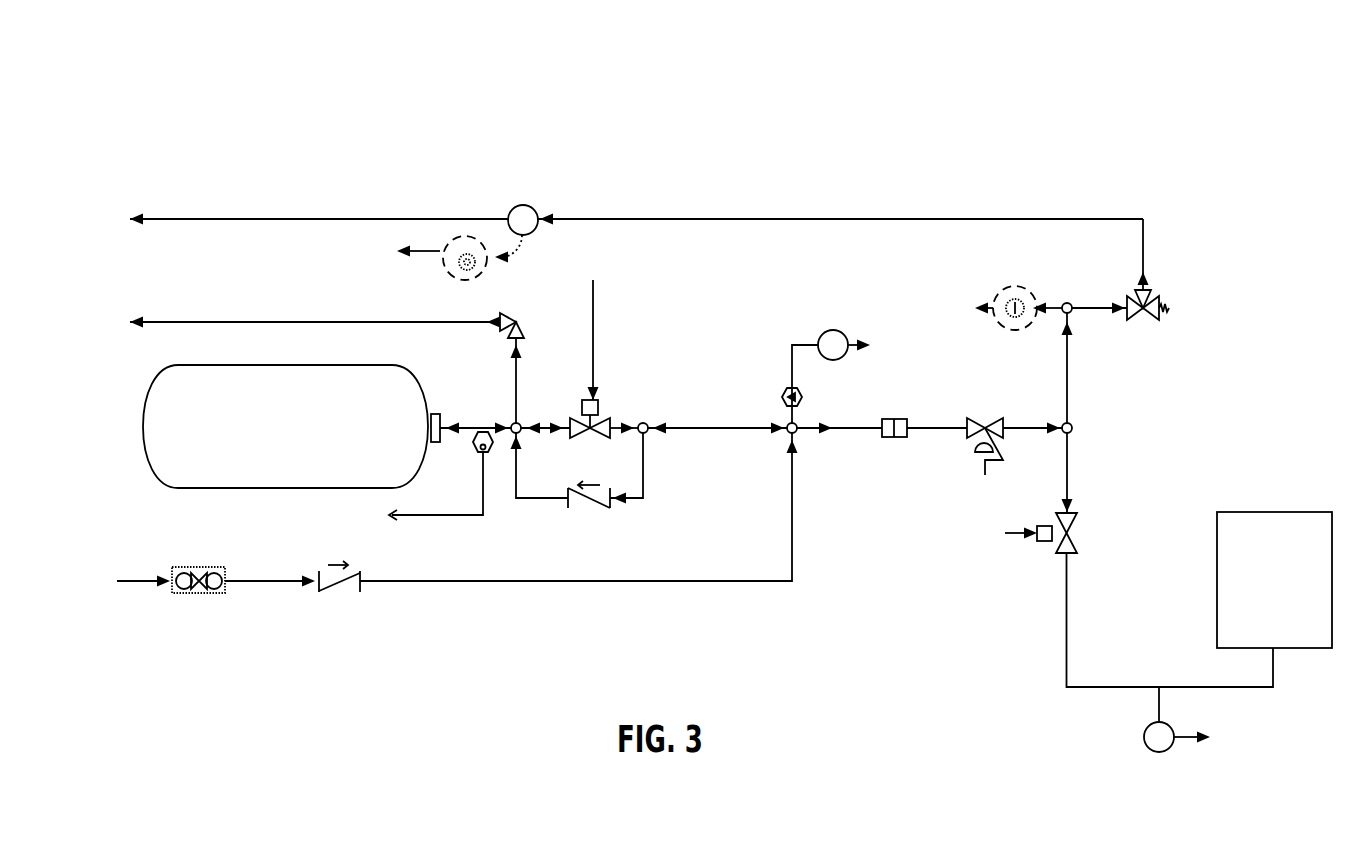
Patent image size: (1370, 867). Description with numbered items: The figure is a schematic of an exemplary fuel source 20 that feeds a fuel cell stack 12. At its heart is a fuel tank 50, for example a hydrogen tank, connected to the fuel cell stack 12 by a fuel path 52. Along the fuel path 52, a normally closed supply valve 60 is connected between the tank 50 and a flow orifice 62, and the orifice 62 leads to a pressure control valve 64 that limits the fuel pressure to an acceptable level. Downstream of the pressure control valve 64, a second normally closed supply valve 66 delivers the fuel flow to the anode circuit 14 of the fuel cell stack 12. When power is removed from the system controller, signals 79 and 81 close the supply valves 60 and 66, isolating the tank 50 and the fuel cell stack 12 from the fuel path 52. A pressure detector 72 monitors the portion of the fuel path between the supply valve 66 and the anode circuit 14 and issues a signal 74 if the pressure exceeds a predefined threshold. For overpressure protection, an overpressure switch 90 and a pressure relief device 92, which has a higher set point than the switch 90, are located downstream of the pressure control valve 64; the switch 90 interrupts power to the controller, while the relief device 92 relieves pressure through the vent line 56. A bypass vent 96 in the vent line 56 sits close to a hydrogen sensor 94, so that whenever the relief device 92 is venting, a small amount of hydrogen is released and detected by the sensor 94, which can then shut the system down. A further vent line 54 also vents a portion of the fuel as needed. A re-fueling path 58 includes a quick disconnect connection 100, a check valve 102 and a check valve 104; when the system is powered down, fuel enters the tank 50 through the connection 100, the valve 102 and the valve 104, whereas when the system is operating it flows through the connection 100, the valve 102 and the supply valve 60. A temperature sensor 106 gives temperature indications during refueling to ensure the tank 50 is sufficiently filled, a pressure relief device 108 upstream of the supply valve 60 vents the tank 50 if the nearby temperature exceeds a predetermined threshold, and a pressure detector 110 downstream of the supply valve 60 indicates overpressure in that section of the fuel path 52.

The fuel cell stack 12 is at (1279, 558).
The anode circuit 14 is at (1207, 637).
The fuel source 20 is at (1024, 181).
The fuel tank 50 is at (291, 413).
The fuel path 52 is at (710, 408).
The vent line 54 is at (315, 311).
The vent line 56 is at (639, 241).
The re-fueling path 58 is at (457, 523).
The supply valve 60 is at (617, 401).
The flow orifice 62 is at (921, 414).
The pressure control valve 64 is at (1003, 433).
The supply valve 66 is at (1095, 493).
The pressure detector 72 is at (1184, 767).
The signal 74 is at (1210, 754).
The signal 79 is at (622, 340).
The signal 81 is at (1002, 549).
The overpressure switch 90 is at (1033, 290).
The pressure relief device 92 is at (1166, 321).
The hydrogen sensor 94 is at (436, 265).
The bypass vent 96 is at (543, 219).
The quick disconnect connection 100 is at (223, 567).
The check valve 102 is at (371, 593).
The check valve 104 is at (592, 489).
The temperature sensor 106 is at (441, 449).
The pressure relief device 108 is at (538, 354).
The pressure detector 110 is at (861, 362).